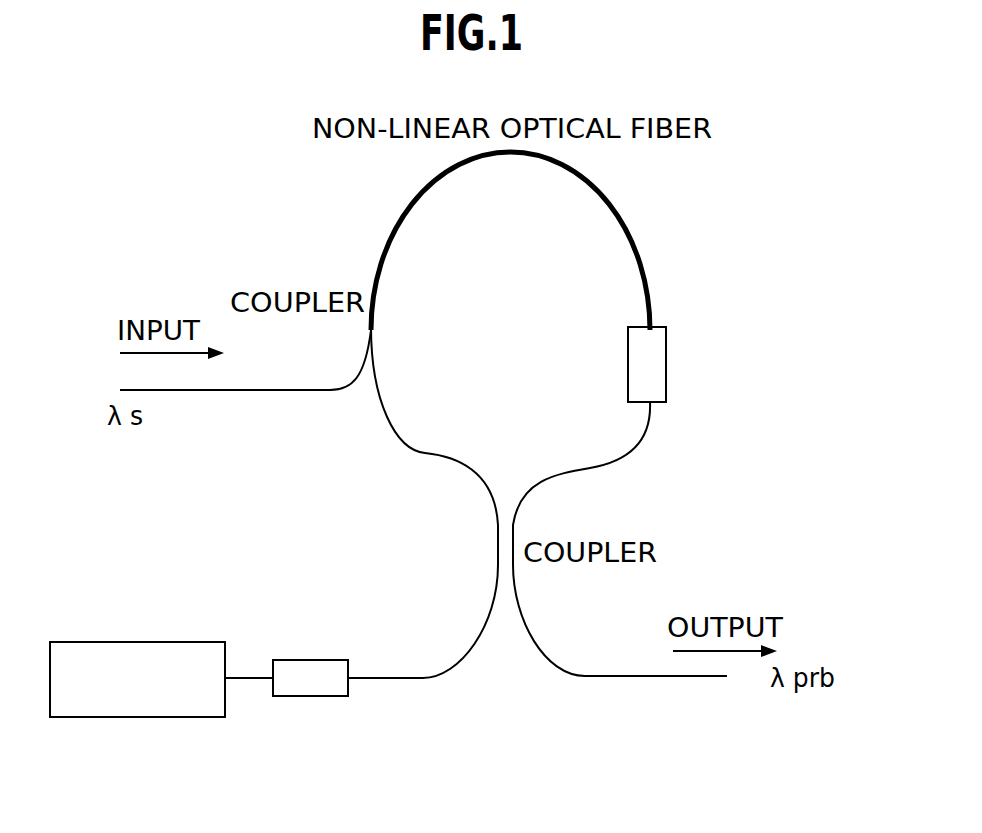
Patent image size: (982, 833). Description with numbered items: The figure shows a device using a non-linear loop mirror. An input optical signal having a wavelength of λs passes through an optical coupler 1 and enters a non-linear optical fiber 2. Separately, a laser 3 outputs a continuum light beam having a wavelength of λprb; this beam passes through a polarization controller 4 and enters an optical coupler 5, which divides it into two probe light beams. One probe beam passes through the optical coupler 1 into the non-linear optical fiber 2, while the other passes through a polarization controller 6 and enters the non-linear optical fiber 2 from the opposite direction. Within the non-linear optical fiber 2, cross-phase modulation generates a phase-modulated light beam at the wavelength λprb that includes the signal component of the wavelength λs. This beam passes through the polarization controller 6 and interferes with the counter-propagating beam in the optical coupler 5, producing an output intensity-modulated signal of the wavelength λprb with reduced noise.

The optical coupler 1 is at (375, 328).
The non-linear optical fiber 2 is at (409, 206).
The laser 3 is at (137, 717).
The polarization controller 4 is at (313, 660).
The optical coupler 5 is at (498, 553).
The polarization controller 6 is at (666, 322).